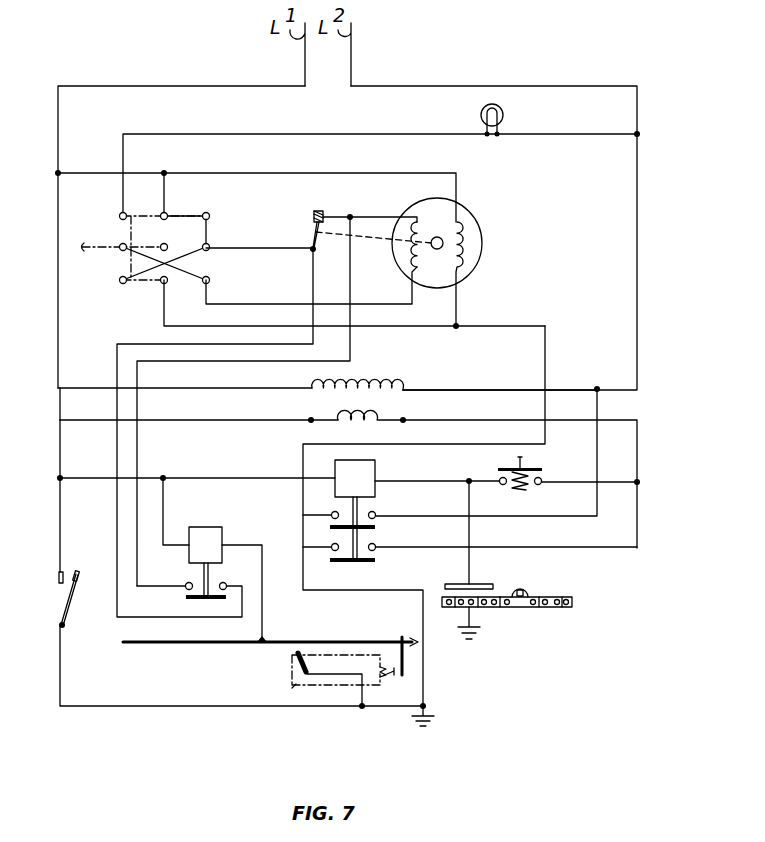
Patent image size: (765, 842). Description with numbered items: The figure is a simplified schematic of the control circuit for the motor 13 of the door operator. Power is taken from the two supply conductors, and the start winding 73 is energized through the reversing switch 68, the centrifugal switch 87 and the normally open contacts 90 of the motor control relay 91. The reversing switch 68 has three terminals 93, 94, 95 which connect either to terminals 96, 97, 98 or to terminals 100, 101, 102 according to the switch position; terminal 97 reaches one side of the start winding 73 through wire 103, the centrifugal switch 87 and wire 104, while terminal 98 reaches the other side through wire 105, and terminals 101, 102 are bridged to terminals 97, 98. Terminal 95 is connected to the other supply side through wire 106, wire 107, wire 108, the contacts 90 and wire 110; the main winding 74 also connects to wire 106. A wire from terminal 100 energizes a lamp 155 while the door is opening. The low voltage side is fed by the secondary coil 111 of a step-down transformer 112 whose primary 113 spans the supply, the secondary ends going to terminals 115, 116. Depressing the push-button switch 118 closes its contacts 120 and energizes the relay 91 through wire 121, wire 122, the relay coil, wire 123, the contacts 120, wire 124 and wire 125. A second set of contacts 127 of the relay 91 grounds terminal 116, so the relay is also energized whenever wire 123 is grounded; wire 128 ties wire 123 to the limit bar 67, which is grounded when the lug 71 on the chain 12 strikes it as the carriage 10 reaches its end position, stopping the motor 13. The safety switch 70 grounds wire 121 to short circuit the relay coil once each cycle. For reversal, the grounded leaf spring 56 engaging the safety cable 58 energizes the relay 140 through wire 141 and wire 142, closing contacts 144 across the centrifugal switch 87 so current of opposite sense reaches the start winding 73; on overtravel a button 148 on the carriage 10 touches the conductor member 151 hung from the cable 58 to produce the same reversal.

The lamp 155 is at (503, 116).
The reversing switch 68 is at (183, 222).
The terminal 93 is at (163, 214).
The terminal 94 is at (167, 247).
The terminal 95 is at (162, 283).
The terminal 96 is at (209, 216).
The terminal 97 is at (209, 247).
The terminal 98 is at (209, 280).
The terminal 100 is at (120, 216).
The terminal 101 is at (119, 243).
The terminal 102 is at (119, 280).
The wire 103 is at (293, 246).
The wire 104 is at (348, 209).
The wire 105 is at (300, 298).
The wire 106 is at (373, 328).
The wire 107 is at (484, 328).
The wire 108 is at (545, 372).
The centrifugal switch 87 is at (319, 206).
The motor 13 is at (457, 256).
The start winding 73 is at (416, 206).
The main winding 74 is at (462, 220).
The primary 113 is at (366, 382).
The secondary coil 111 is at (350, 397).
The step-down transformer 112 is at (407, 412).
The terminal 115 is at (309, 421).
The terminal 116 is at (406, 422).
The wire 121 is at (162, 422).
The wire 122 is at (218, 476).
The wire 123 is at (426, 480).
The wire 124 is at (610, 502).
The wire 125 is at (637, 450).
The wire 141 is at (165, 509).
The wire 142 is at (300, 598).
The push-button switch 118 is at (538, 467).
The contacts 120 is at (508, 490).
The wire 110 is at (516, 530).
The motor control relay 91 is at (373, 471).
The contacts 90 is at (374, 510).
The contacts 127 is at (374, 544).
The wire 128 is at (471, 568).
The limit bar 67 is at (442, 584).
The chain 12 is at (505, 616).
The lug 71 is at (528, 591).
The relay 140 is at (224, 530).
The contacts 144 is at (188, 587).
The safety cable 58 is at (370, 640).
The conductor member 151 is at (415, 656).
The leaf spring 56 is at (294, 668).
The carriage 10 is at (284, 686).
The button 148 is at (393, 678).
The safety switch 70 is at (55, 603).